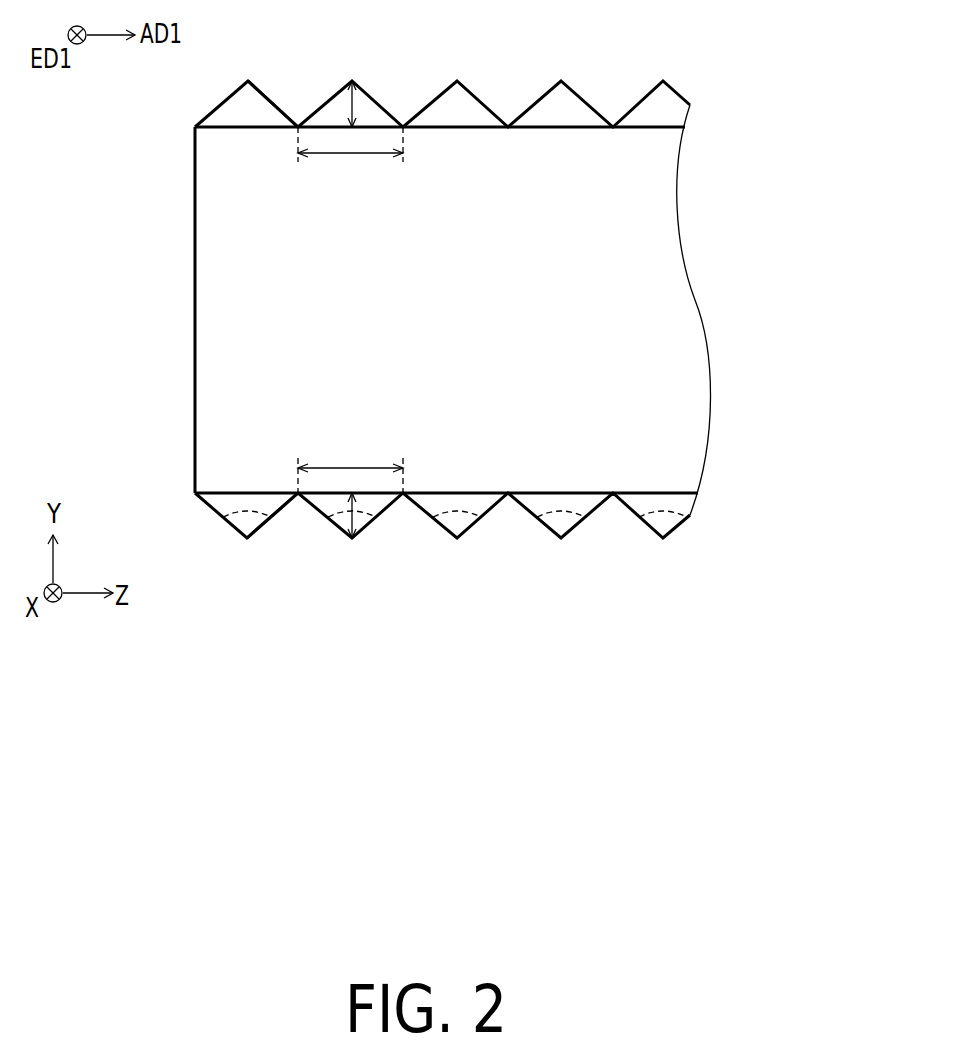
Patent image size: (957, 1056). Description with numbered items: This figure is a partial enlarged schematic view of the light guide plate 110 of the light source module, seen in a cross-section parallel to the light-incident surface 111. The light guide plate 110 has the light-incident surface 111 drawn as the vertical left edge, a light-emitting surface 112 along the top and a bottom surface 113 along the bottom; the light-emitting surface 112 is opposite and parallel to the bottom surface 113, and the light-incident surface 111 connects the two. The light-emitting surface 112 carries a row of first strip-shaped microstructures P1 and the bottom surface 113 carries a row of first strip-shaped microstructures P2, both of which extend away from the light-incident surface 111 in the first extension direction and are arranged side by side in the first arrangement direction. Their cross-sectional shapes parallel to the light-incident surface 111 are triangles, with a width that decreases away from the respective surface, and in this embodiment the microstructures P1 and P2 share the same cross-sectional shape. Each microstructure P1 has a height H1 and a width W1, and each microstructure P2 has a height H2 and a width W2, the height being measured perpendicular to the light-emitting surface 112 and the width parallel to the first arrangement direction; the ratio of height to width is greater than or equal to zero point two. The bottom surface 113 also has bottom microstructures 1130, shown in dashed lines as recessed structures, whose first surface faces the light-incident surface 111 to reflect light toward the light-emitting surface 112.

The light guide plate 110 is at (650, 298).
The light-incident surface 111 is at (250, 328).
The light-emitting surface 112 is at (228, 127).
The bottom surface 113 is at (228, 494).
The bottom microstructures 1130 is at (463, 520).
The first strip-shaped microstructures P1 is at (270, 117).
The first strip-shaped microstructures P2 is at (270, 505).
The height H1 is at (360, 97).
The height H2 is at (363, 532).
The width W1 is at (353, 153).
The width W2 is at (352, 467).